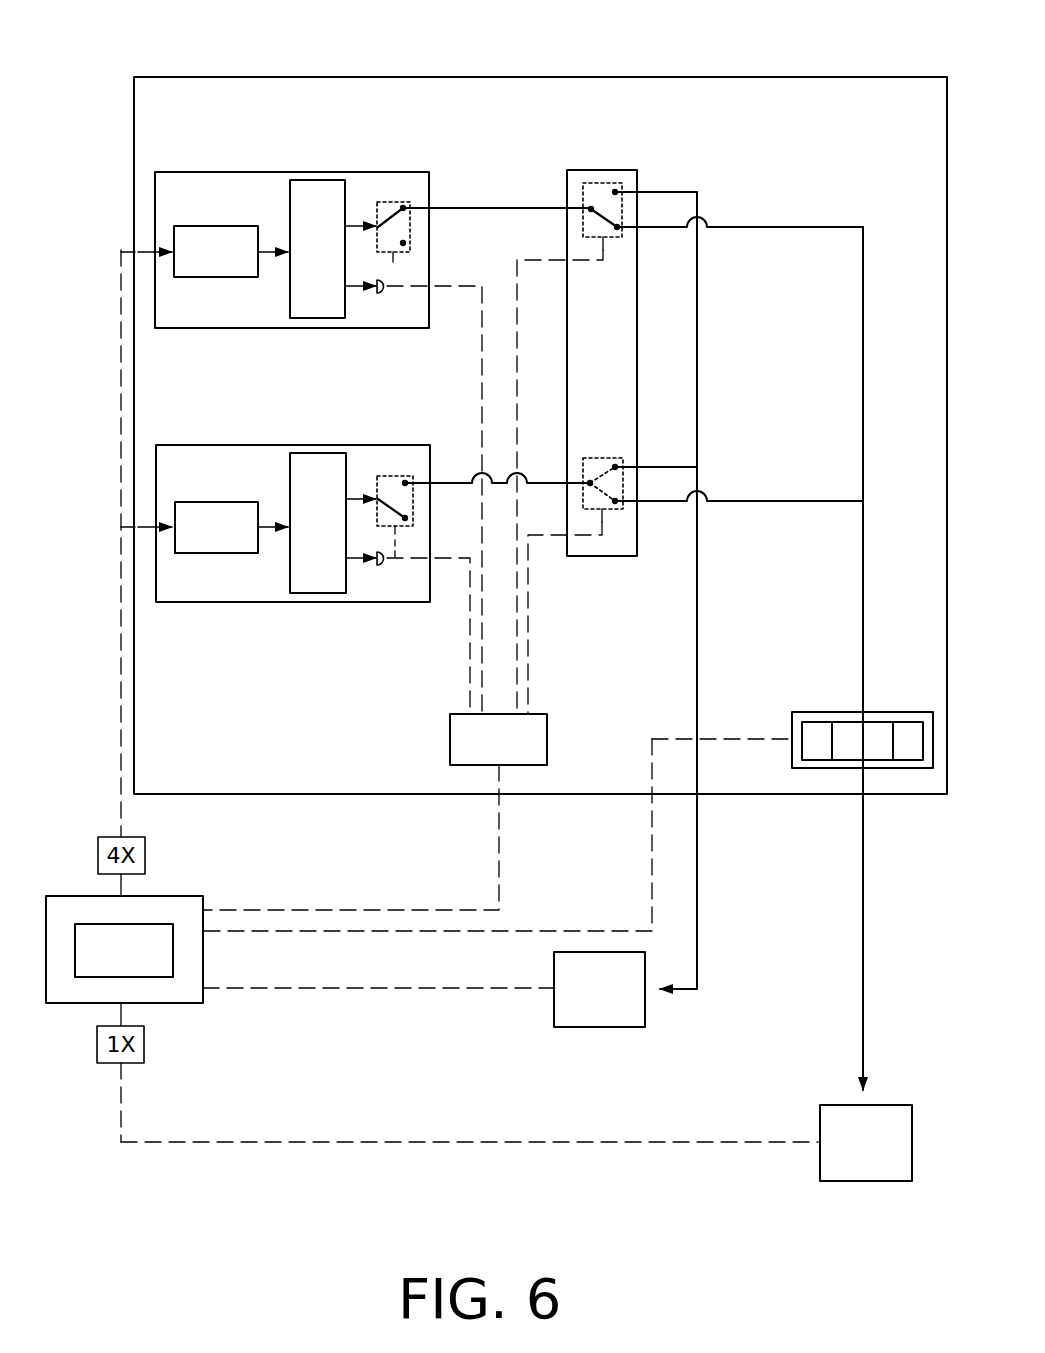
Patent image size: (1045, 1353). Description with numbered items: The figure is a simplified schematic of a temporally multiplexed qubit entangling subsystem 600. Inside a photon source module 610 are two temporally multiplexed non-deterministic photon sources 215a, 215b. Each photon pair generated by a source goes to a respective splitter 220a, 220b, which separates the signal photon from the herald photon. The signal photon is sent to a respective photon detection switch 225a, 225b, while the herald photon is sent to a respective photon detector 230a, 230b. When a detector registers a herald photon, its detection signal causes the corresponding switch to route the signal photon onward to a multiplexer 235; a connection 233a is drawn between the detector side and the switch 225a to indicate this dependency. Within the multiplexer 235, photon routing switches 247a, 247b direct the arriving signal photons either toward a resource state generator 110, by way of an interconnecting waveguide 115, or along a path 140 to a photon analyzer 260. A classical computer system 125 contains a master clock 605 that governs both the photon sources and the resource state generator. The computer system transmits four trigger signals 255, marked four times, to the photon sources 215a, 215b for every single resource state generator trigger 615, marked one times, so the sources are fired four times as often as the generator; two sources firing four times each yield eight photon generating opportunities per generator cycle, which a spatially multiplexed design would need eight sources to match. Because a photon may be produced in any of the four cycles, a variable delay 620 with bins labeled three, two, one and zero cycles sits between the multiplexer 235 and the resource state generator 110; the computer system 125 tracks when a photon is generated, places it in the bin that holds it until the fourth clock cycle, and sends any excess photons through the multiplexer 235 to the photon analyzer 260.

The temporally multiplexed qubit entangling subsystem 600 is at (150, 46).
The photon source module 610 is at (542, 76).
The photon source 215a is at (173, 238).
The photon source 215b is at (173, 513).
The splitter 220a is at (288, 298).
The splitter 220b is at (290, 560).
The photon detection switch 225a is at (397, 202).
The photon detection switch 225b is at (395, 476).
The photon detector 230a is at (379, 293).
The photon detector 230b is at (380, 565).
The switch control line 233a is at (393, 286).
The multiplexer 235 is at (602, 170).
The photon routing switch 247a is at (622, 210).
The photon routing switch 247b is at (612, 509).
The trigger signal 255 is at (121, 430).
The variable delay 620 is at (845, 712).
The master clock 605 is at (124, 950).
The classical computer system 125 is at (149, 963).
The photon analyzer 260 is at (587, 1028).
The feedback line 140 is at (698, 983).
The interconnecting waveguide 115 is at (863, 972).
The resource state generator 110 is at (879, 1181).
The resource state generator trigger 615 is at (540, 1142).